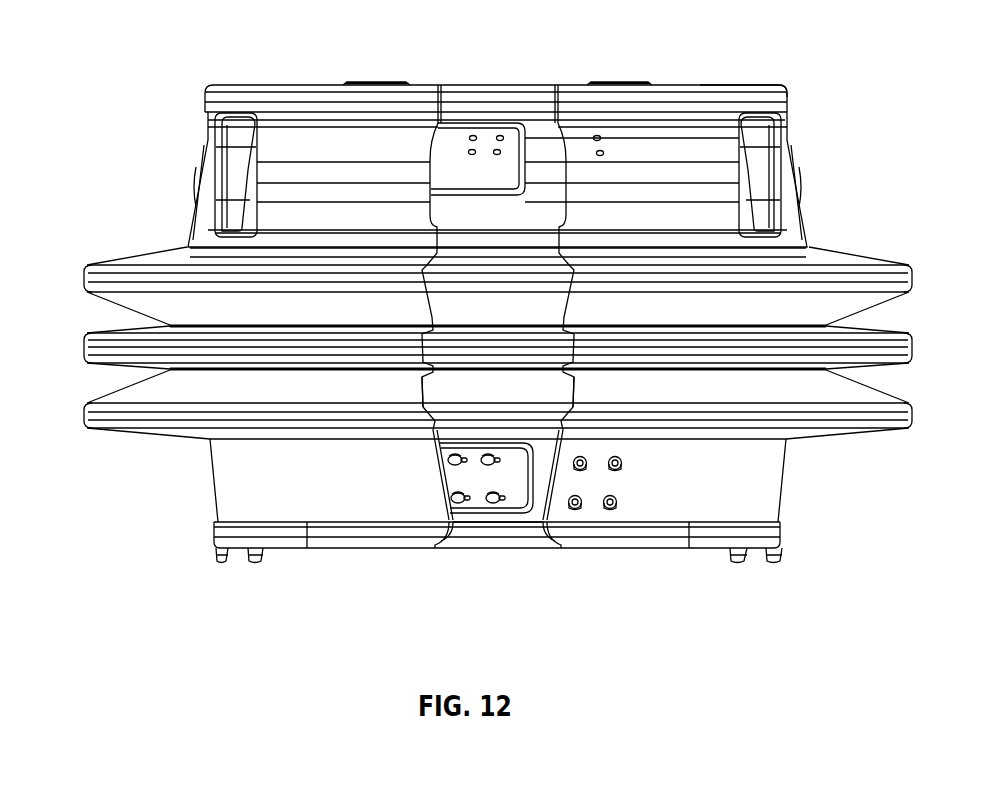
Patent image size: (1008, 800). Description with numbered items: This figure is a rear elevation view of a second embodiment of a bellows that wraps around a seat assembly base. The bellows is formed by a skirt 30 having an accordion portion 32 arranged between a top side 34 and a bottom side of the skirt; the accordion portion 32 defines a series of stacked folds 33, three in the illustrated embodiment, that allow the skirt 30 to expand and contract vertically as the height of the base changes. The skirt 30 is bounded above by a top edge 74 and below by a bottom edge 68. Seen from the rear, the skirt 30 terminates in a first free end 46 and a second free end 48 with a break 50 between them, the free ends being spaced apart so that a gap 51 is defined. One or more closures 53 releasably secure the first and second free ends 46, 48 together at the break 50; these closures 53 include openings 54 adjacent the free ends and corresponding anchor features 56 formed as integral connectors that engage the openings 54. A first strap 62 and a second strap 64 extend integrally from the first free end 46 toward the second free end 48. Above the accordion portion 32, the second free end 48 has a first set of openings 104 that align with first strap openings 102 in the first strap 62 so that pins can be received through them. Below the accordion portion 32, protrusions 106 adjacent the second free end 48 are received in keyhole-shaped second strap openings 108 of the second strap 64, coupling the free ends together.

The skirt 30 is at (790, 141).
The accordion portion 32 is at (80, 262).
The folds 33 is at (128, 437).
The top side 34 is at (754, 80).
The first free end 46 is at (428, 379).
The second free end 48 is at (568, 379).
The break 50 is at (574, 257).
The gap 51 is at (545, 84).
The closures 53 is at (540, 612).
The openings 54 is at (495, 518).
The anchor features 56 is at (514, 542).
The first strap 62 is at (489, 124).
The second strap 64 is at (485, 505).
The bottom edge 68 is at (213, 541).
The top edge 74 is at (784, 96).
The first strap openings 102 is at (466, 152).
The first set of openings 104 is at (603, 154).
The protrusions 106 is at (611, 513).
The second strap openings 108 is at (451, 498).